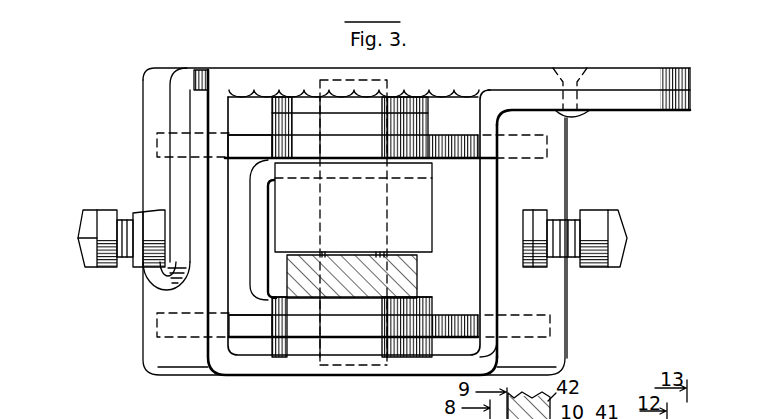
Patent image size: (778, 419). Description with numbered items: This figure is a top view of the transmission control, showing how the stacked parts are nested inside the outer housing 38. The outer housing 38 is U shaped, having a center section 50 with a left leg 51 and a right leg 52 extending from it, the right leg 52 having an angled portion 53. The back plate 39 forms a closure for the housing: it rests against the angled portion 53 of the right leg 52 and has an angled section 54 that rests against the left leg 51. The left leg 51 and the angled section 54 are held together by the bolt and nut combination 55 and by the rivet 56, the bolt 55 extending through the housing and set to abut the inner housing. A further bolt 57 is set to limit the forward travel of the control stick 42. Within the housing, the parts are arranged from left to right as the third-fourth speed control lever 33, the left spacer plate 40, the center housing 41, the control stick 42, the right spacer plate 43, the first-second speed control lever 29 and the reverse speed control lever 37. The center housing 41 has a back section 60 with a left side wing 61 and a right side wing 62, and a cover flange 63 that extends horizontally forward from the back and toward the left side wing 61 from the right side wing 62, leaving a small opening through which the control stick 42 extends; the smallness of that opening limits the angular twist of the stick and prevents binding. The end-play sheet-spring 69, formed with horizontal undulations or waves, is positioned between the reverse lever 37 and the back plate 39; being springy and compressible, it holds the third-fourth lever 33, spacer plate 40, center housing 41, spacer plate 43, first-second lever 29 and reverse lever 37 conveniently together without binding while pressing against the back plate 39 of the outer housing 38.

The first-second speed control lever 29 is at (425, 128).
The third-fourth speed control lever 33 is at (422, 348).
The reverse speed control lever 37 is at (425, 105).
The outer housing 38 is at (296, 372).
The back plate 39 is at (541, 60).
The left spacer plate 40 is at (240, 327).
The center housing 41 is at (425, 233).
The control stick 42 is at (412, 268).
The right spacer plate 43 is at (257, 145).
The center section 50 is at (250, 367).
The left leg 51 is at (152, 300).
The right leg 52 is at (556, 290).
The angled portion 53 is at (650, 108).
The angled section 54 is at (150, 178).
The bolt and nut combination 55 is at (82, 251).
The rivet 56 is at (578, 118).
The bolt 57 is at (614, 216).
The back section 60 is at (258, 238).
The left side wing 61 is at (416, 306).
The right side wing 62 is at (430, 173).
The cover flange 63 is at (370, 200).
The end-play sheet-spring 69 is at (248, 92).